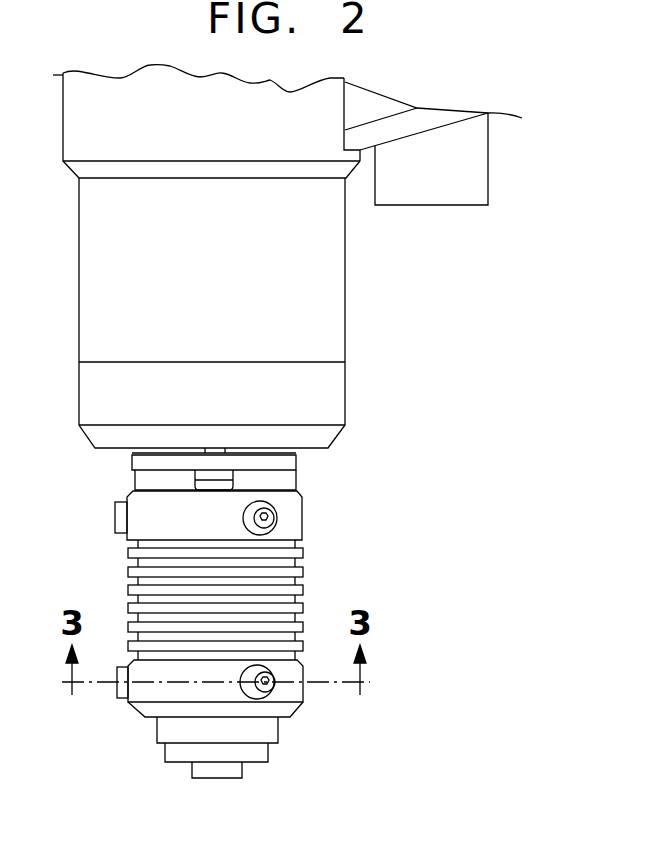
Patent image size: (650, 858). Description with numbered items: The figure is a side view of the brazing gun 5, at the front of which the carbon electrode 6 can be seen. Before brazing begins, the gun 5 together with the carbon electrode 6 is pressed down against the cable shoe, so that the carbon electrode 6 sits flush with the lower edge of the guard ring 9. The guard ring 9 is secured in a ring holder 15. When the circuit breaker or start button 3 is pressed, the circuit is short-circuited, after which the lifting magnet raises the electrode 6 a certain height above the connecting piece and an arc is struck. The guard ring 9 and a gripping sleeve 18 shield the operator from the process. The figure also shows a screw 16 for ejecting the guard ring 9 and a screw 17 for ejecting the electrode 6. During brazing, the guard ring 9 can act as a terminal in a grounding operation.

The start button 3 is at (475, 167).
The brazing gun 5 is at (315, 280).
The carbon electrode 6 is at (207, 775).
The guard ring 9 is at (258, 753).
The ring holder 15 is at (165, 732).
The screw for ejecting the guard ring 16 is at (268, 685).
The screw for ejecting the electrode 17 is at (267, 518).
The gripping sleeve 18 is at (178, 592).